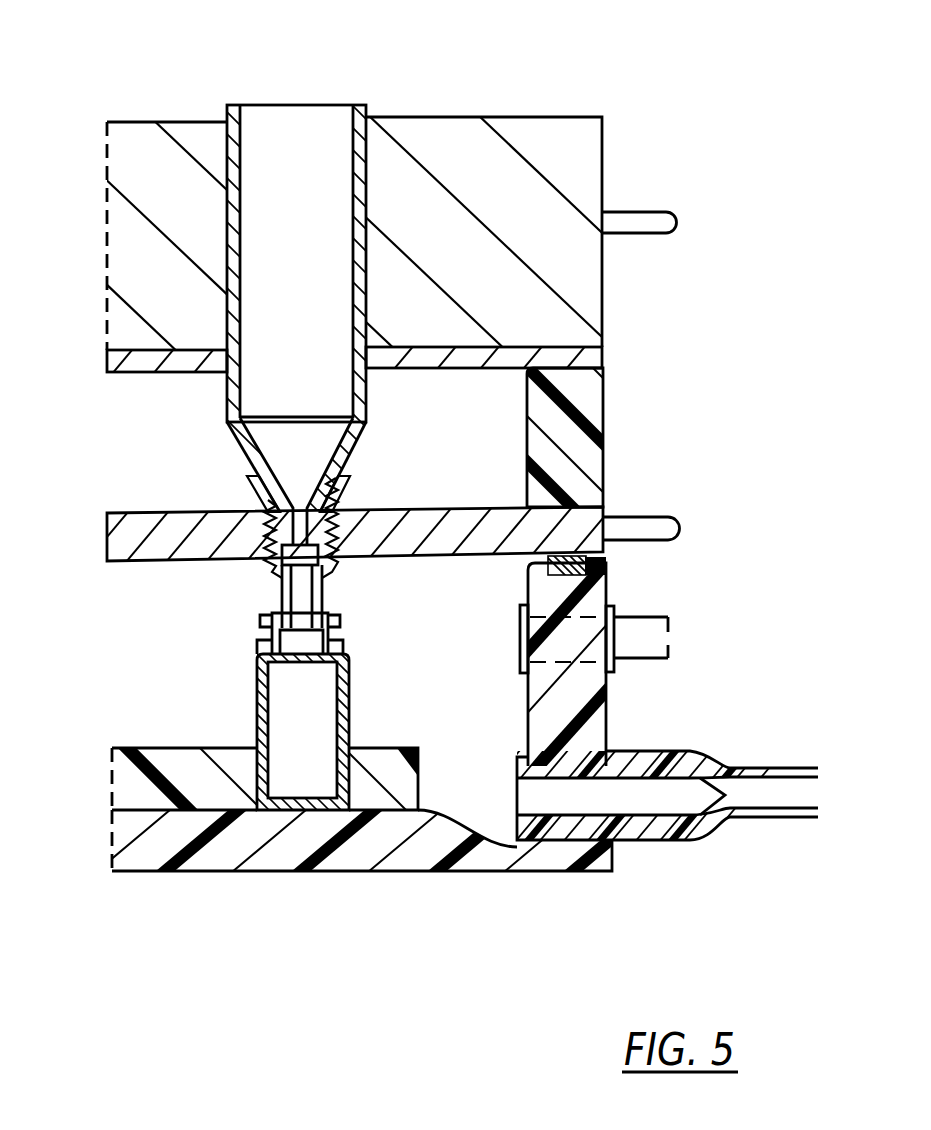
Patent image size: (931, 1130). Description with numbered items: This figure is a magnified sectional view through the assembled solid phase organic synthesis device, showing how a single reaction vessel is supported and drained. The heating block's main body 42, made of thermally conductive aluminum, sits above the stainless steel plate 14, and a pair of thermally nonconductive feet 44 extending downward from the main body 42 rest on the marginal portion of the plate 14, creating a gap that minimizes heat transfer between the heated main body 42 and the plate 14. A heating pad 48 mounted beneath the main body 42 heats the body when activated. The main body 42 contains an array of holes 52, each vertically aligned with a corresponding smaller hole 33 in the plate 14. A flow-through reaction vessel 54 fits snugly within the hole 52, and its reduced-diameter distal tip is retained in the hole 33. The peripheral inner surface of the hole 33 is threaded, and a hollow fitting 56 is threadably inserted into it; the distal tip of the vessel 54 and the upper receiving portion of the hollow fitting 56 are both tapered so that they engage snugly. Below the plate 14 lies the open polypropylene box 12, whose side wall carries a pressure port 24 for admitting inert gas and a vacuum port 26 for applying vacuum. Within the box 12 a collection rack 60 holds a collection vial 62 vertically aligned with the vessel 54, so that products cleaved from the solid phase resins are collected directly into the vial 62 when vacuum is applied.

The box 12 is at (468, 855).
The stainless steel plate 14 is at (598, 518).
The pressure port 24 is at (616, 609).
The vacuum port 26 is at (615, 753).
The hole 33 is at (260, 513).
The main body 42 is at (460, 135).
The feet 44 is at (594, 451).
The heating pad 48 is at (594, 346).
The hole 52 is at (227, 351).
The flow-through reaction vessel 54 is at (333, 128).
The hollow fitting 56 is at (250, 477).
The collection rack 60 is at (228, 797).
The collection vial 62 is at (256, 707).